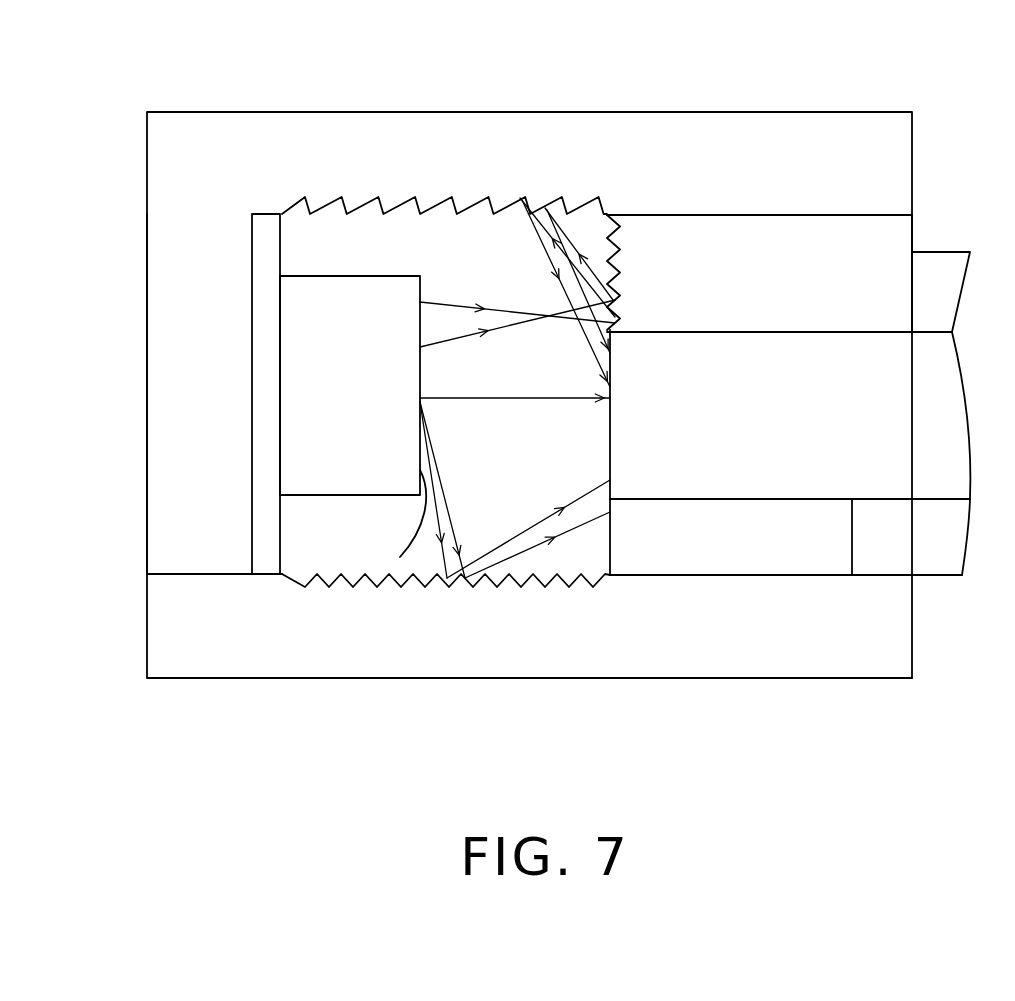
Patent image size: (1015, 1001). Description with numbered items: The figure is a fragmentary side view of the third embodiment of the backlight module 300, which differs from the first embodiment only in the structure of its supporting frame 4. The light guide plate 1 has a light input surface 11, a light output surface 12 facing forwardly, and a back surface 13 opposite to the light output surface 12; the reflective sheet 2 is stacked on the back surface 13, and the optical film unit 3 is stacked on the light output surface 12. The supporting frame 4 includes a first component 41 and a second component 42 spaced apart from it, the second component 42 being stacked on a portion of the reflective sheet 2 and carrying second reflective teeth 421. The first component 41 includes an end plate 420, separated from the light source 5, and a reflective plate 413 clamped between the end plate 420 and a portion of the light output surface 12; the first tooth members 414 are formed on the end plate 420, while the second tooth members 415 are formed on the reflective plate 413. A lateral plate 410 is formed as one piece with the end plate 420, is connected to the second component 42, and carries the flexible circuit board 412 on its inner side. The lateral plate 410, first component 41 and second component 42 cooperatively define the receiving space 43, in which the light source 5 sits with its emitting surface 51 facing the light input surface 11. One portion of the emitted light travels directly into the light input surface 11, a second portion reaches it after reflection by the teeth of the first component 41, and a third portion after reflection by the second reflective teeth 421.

The backlight module 300 is at (60, 63).
The supporting frame 4 is at (122, 167).
The first component 41 is at (506, 100).
The lateral plate 410 is at (202, 535).
The flexible circuit board 412 is at (267, 407).
The reflective plate 413 is at (788, 245).
The first tooth members 414 is at (318, 197).
The second tooth members 415 is at (607, 215).
The second component 42 is at (565, 650).
The end plate 420 is at (522, 163).
The second reflective teeth 421 is at (463, 590).
The receiving space 43 is at (447, 236).
The light source 5 is at (307, 468).
The emitting surface 51 is at (400, 557).
The optical film unit 3 is at (922, 282).
The light output surface 12 is at (948, 330).
The light guide plate 1 is at (920, 450).
The light input surface 11 is at (612, 458).
The reflective sheet 2 is at (755, 549).
The back surface 13 is at (852, 500).